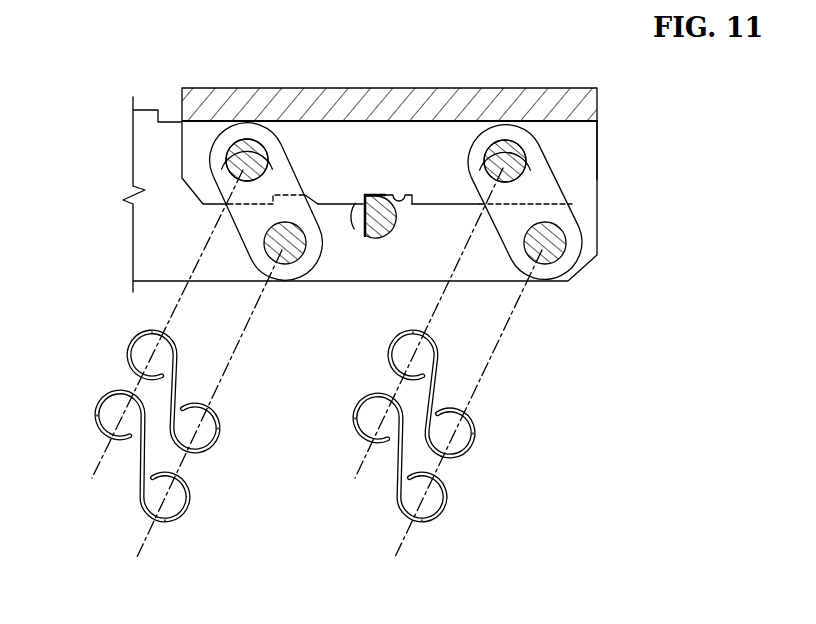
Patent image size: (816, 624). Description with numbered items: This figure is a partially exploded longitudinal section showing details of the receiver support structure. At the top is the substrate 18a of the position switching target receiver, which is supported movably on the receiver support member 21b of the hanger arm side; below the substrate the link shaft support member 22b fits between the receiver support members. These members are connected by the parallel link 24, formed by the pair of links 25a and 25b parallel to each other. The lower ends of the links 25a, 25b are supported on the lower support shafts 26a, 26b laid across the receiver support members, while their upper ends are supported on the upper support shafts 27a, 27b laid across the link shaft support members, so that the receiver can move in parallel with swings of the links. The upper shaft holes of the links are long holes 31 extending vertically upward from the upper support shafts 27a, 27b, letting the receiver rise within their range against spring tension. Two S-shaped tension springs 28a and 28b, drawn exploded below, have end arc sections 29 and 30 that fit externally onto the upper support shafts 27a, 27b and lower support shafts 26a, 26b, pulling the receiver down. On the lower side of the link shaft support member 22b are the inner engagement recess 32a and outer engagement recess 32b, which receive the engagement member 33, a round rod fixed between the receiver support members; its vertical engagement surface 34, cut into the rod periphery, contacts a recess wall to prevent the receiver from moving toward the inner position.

The substrate 18a is at (332, 96).
The receiver support member 21b is at (480, 263).
The link shaft support member 22b is at (570, 140).
The parallel link 24 is at (572, 206).
The link 25a is at (240, 218).
The link 25b is at (540, 185).
The lower support shaft 26a is at (264, 243).
The lower support shaft 26b is at (567, 237).
The upper support shaft 27a is at (232, 162).
The upper support shaft 27b is at (483, 153).
The tension spring 28a is at (174, 402).
The tension spring 28b is at (412, 413).
The end arc section 29 is at (108, 398).
The end arc section 30 is at (193, 503).
The long hole 31 is at (240, 140).
The inner engagement recess 32a is at (407, 194).
The outer engagement recess 32b is at (303, 200).
The engagement member 33 is at (385, 213).
The vertical engagement surface 34 is at (362, 204).